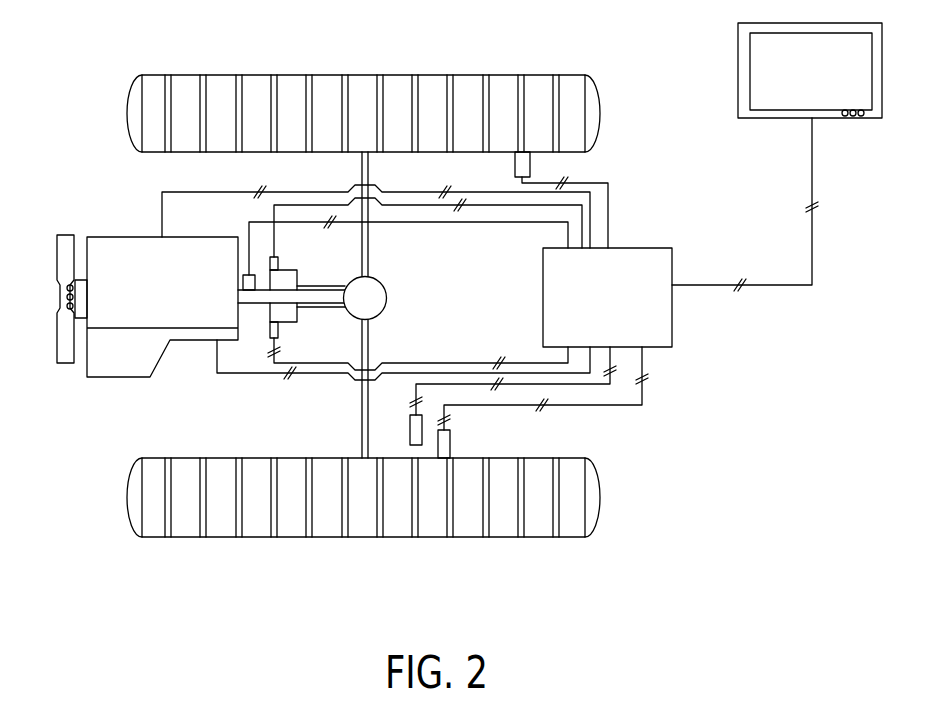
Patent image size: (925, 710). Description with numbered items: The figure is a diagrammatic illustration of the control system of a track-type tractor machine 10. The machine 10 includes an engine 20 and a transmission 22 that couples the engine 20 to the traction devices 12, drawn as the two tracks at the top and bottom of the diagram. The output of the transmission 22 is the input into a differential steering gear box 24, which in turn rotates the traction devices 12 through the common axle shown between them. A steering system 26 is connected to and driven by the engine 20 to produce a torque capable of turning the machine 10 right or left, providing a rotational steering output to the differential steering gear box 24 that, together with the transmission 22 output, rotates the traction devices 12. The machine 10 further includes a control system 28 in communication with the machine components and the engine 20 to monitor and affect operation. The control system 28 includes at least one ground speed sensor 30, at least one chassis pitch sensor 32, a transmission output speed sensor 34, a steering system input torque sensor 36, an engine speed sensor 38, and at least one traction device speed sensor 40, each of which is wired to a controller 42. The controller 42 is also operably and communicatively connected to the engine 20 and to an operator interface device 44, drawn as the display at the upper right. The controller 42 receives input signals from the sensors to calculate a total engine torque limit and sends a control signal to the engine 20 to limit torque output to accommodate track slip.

The machine 10 is at (58, 165).
The traction devices 12 is at (198, 74).
The engine 20 is at (126, 237).
The transmission 22 is at (300, 284).
The differential steering gear box 24 is at (381, 311).
The steering system 26 is at (268, 304).
The control system 28 is at (750, 401).
The ground speed sensor 30 is at (452, 445).
The chassis pitch sensor 32 is at (410, 432).
The transmission output speed sensor 34 is at (280, 262).
The steering system input torque sensor 36 is at (282, 331).
The engine speed sensor 38 is at (249, 242).
The traction device speed sensor 40 is at (517, 186).
The controller 42 is at (621, 247).
The operator interface device 44 is at (777, 120).